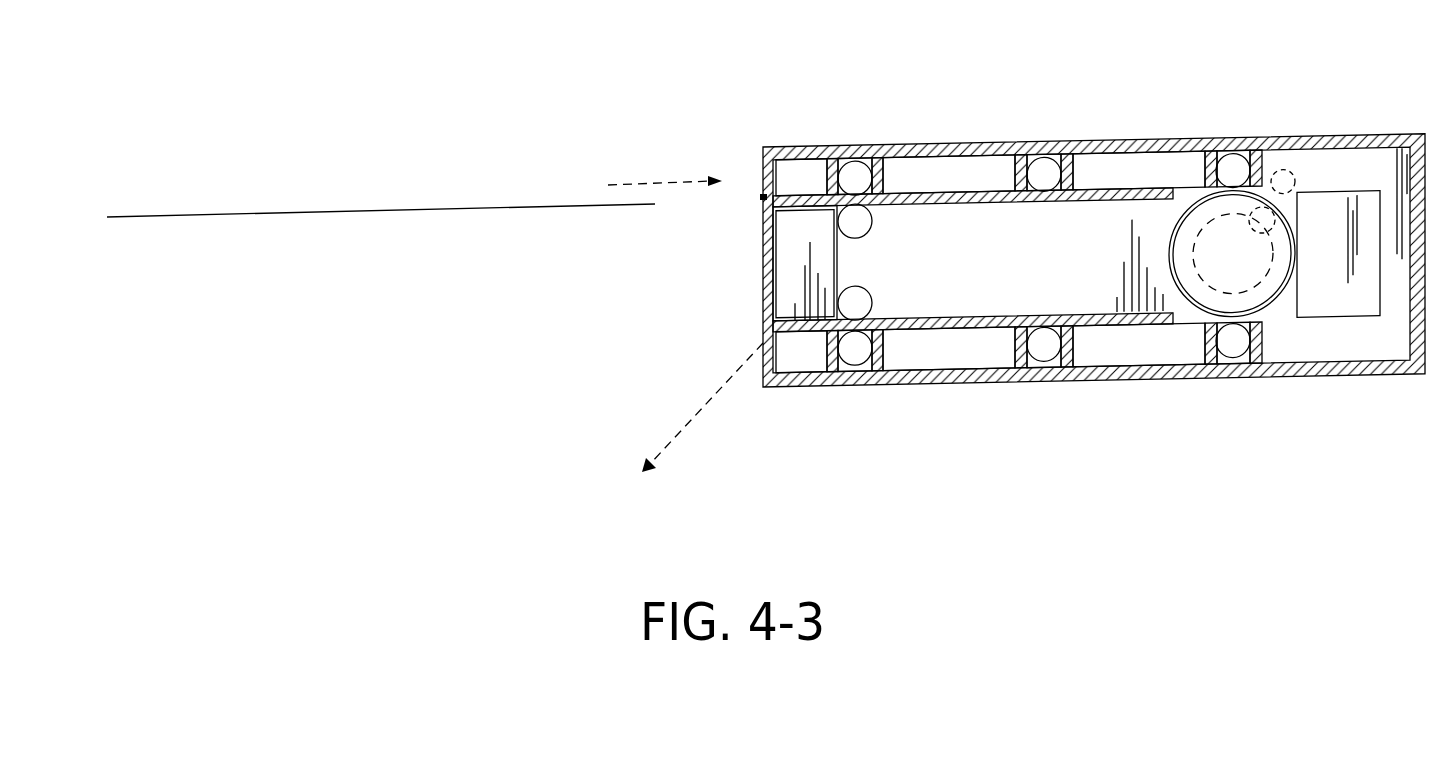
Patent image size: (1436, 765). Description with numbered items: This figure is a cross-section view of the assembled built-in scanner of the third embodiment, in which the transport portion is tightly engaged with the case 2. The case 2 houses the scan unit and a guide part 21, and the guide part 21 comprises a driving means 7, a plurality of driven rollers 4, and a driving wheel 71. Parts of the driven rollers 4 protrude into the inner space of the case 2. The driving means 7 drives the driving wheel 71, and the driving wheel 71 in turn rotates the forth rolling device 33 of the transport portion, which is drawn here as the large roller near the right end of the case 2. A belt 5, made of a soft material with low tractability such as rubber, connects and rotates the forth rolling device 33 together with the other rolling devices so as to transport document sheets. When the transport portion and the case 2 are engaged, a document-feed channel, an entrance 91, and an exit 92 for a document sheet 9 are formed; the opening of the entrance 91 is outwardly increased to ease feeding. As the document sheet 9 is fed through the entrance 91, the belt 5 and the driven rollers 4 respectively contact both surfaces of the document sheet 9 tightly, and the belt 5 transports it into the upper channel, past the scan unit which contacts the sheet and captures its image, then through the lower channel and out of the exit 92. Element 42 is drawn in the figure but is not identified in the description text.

The case 2 is at (1352, 140).
The driven rollers 4 is at (1043, 172).
The belt 5 is at (835, 254).
The driving means 7 is at (1283, 178).
The document sheet 9 is at (357, 208).
The guide part 21 is at (957, 178).
The forth rolling device 33 is at (1212, 302).
The bearing 42 is at (855, 212).
The driving wheel 71 is at (1240, 212).
The entrance 91 is at (756, 197).
The exit 92 is at (763, 342).